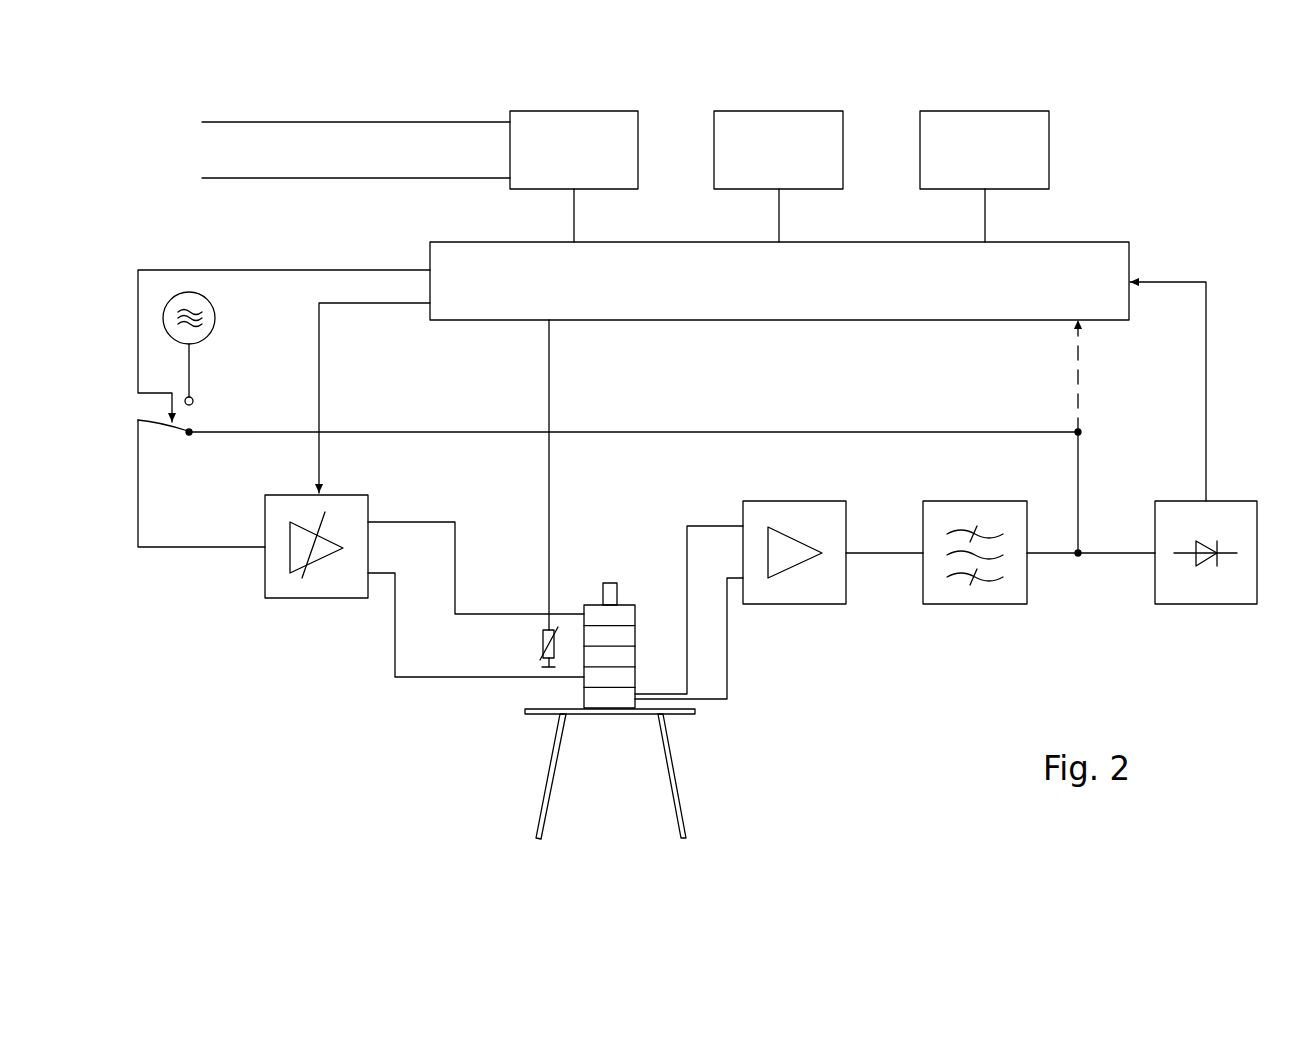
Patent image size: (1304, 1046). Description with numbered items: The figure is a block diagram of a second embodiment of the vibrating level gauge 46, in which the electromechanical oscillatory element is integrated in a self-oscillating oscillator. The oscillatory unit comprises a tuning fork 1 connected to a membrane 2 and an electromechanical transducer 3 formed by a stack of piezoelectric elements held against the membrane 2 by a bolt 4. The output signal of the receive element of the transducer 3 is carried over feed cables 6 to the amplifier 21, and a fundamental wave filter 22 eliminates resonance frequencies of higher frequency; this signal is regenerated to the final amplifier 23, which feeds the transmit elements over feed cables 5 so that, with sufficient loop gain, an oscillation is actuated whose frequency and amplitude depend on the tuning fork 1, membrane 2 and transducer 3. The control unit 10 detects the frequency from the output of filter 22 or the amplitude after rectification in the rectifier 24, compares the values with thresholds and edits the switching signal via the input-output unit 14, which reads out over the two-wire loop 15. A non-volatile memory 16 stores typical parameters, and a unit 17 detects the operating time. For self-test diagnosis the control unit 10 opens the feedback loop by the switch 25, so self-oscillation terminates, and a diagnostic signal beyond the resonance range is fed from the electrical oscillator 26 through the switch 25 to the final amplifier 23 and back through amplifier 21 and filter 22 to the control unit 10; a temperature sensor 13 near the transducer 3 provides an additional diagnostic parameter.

The tuning fork 1 is at (557, 768).
The membrane 2 is at (525, 717).
The electromechanical transducer 3 is at (637, 615).
The bolt 4 is at (618, 595).
The feed cables 5 is at (455, 583).
The feed cables 6 is at (687, 618).
The control unit 10 is at (779, 281).
The temperature sensor 13 is at (543, 658).
The input-output unit 14 is at (603, 190).
The two-wire loop 15 is at (358, 122).
The non-volatile memory 16 is at (808, 190).
The operating time detecting unit 17 is at (1016, 190).
The amplifier 21 is at (785, 500).
The fundamental wave filter 22 is at (965, 500).
The final amplifier 23 is at (342, 493).
The rectifier 24 is at (1228, 500).
The switch 25 is at (608, 408).
The electrical oscillator 26 is at (215, 312).
The vibrating level gauge 46 is at (323, 655).